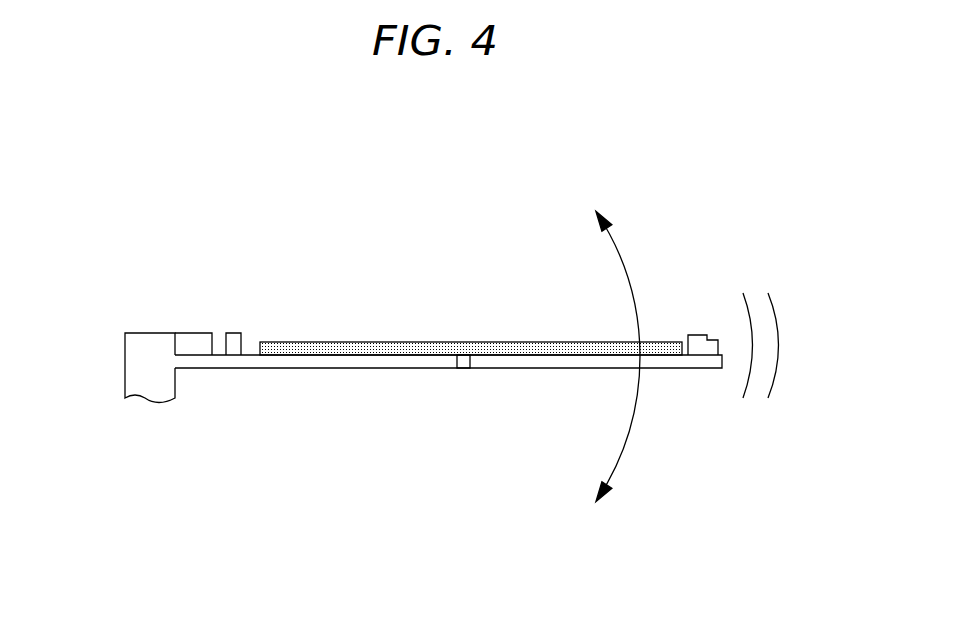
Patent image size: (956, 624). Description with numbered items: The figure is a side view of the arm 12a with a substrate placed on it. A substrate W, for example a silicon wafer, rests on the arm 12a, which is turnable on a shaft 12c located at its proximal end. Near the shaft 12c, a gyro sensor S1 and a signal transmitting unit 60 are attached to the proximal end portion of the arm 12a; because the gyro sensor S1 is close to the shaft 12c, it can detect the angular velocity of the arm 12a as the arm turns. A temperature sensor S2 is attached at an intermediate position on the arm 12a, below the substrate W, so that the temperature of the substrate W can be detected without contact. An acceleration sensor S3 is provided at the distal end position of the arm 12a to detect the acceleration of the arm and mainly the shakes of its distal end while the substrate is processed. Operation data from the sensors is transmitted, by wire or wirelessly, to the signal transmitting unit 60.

The arm 12a is at (540, 360).
The shaft 12c is at (137, 345).
The signal transmitting unit 60 is at (195, 345).
The gyro sensor S1 is at (233, 342).
The substrate W is at (425, 350).
The temperature sensor S2 is at (463, 370).
The acceleration sensor S3 is at (697, 335).